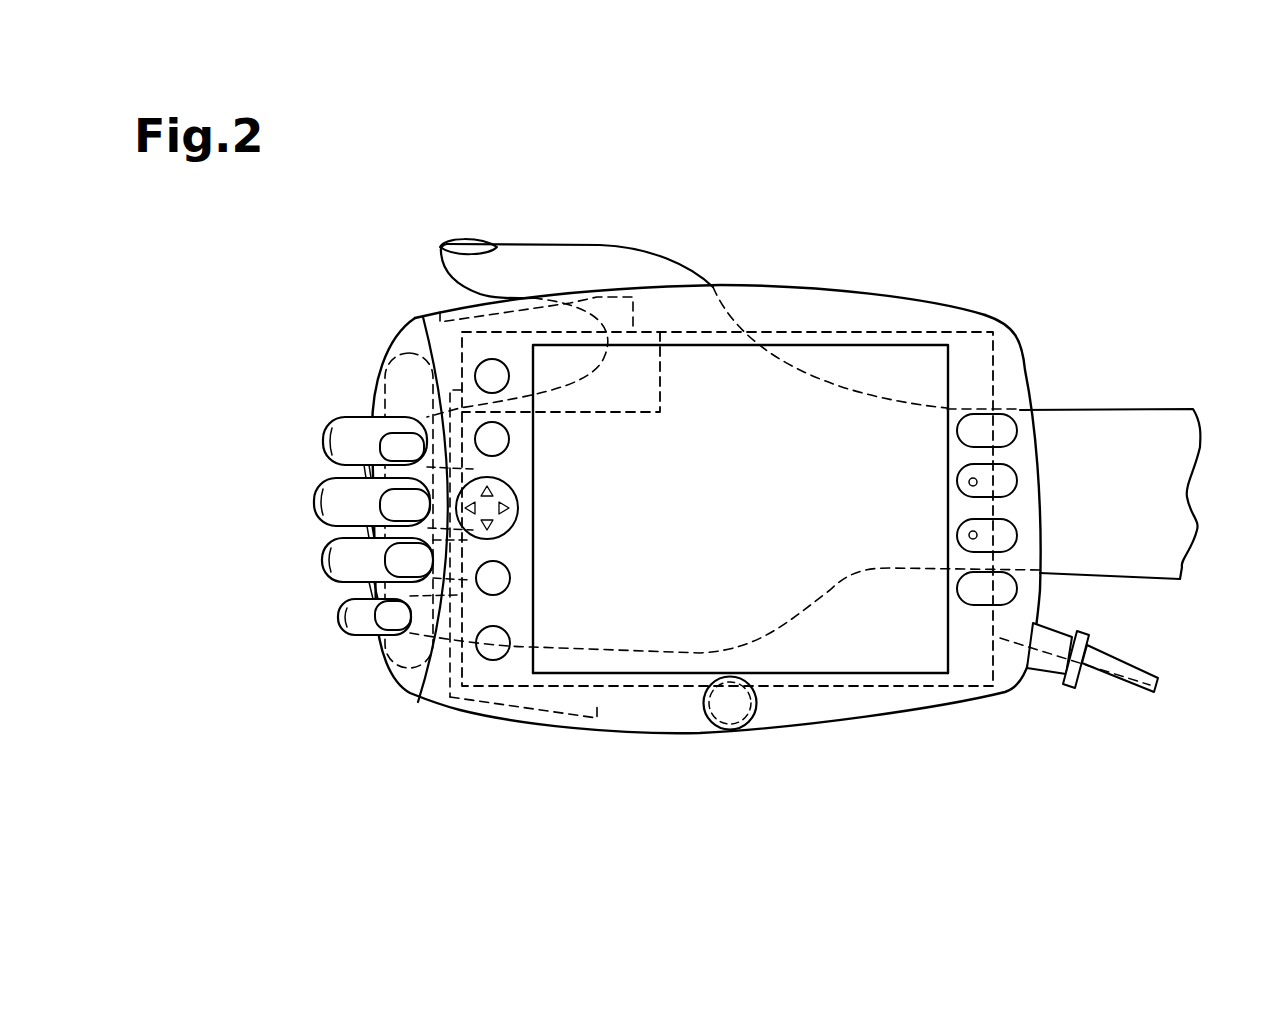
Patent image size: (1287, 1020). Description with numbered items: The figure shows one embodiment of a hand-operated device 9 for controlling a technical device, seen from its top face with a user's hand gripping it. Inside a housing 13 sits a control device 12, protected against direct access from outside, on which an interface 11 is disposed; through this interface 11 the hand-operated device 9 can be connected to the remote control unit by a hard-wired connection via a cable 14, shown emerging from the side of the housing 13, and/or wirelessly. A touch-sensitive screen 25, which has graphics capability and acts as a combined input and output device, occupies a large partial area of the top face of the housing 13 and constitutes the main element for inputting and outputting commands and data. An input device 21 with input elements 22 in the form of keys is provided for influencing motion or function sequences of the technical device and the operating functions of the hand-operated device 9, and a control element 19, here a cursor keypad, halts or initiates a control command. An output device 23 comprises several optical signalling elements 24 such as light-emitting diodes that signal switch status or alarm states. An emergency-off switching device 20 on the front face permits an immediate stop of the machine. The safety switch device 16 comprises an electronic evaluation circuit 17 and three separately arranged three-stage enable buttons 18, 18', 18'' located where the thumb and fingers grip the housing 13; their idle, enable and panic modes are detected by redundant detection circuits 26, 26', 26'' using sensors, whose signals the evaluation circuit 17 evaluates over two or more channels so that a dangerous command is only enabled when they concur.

The hand-operated device 9 is at (1005, 237).
The interface 11 is at (1033, 688).
The control device 12 is at (806, 330).
The housing 13 is at (763, 295).
The cable 14 is at (1133, 670).
The safety switch device 16 is at (366, 337).
The evaluation circuit 17 is at (506, 345).
The enable button 18 is at (365, 485).
The enable button 18' is at (395, 247).
The enable button 18'' is at (485, 770).
The control element 19 is at (520, 542).
The emergency-off switching device 20 is at (757, 723).
The input device 21 is at (857, 653).
The input element 22 is at (488, 657).
The output device 23 is at (898, 653).
The optical signalling element 24 is at (500, 590).
The touch-sensitive screen 25 is at (852, 370).
The detection circuit 26 is at (369, 452).
The detection circuit 26' is at (558, 274).
The detection circuit 26'' is at (384, 570).